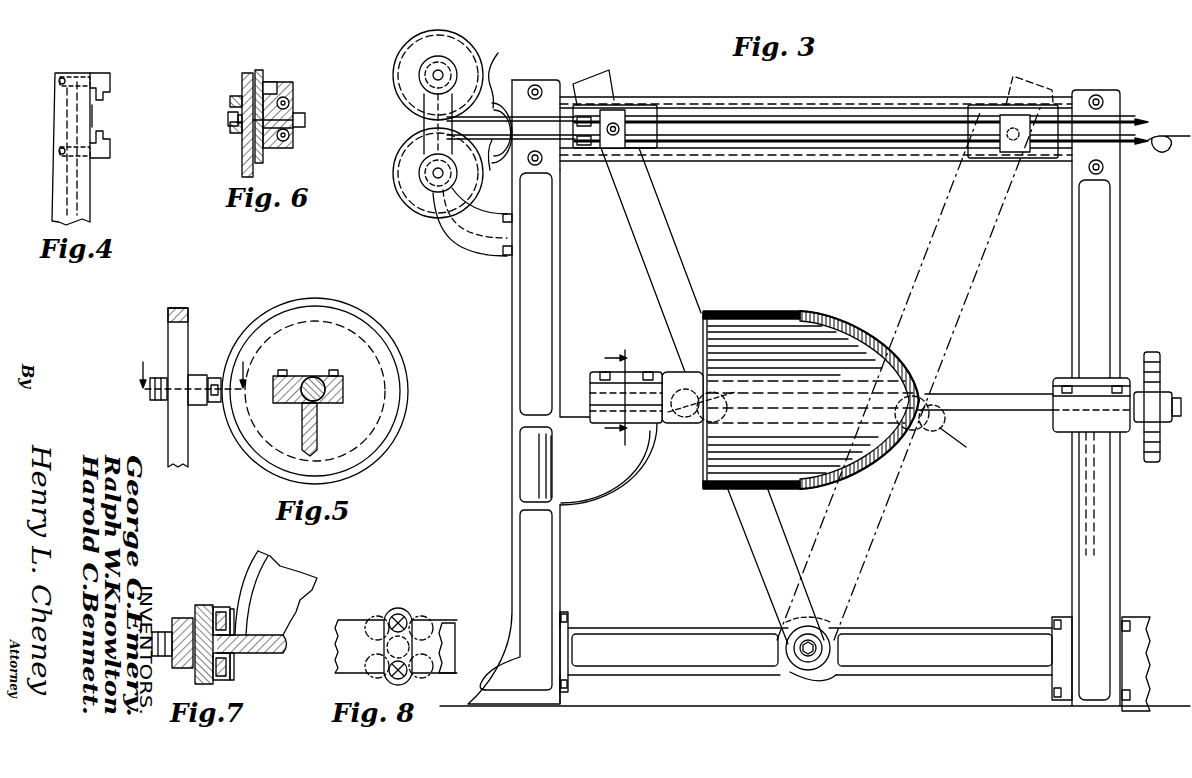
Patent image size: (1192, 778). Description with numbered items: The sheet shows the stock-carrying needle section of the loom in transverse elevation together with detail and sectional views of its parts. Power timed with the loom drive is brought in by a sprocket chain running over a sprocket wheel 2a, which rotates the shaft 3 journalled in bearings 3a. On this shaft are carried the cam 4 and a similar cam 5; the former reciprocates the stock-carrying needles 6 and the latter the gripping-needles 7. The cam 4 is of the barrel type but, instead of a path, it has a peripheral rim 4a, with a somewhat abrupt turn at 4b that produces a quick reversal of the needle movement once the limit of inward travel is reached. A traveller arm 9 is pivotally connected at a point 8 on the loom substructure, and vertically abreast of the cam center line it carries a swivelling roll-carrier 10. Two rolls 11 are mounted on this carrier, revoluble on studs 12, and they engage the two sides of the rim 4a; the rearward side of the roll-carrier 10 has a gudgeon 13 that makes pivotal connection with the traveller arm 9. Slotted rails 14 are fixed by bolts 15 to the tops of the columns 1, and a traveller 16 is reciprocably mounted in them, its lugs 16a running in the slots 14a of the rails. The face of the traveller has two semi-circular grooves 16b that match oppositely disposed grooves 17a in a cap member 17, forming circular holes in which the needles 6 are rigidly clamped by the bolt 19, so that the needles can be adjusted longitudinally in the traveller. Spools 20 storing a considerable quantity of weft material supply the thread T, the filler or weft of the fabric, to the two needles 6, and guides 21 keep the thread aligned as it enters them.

In FIG. 3, the columns 1 is at (525, 309).
In FIG. 4, the columns 1 is at (82, 204).
In FIG. 3, the sprocket wheel 2a is at (1153, 352).
In FIG. 3, the shaft 3 is at (995, 400).
In FIG. 5, the shaft 3 is at (320, 382).
In FIG. 3, the bearings 3a is at (640, 376).
In FIG. 5, the bearings 3a is at (300, 376).
In FIG. 3, the cam 4 is at (748, 322).
In FIG. 5, the cam 4 is at (360, 398).
In FIG. 7, the cam 4 is at (303, 590).
In FIG. 3, the peripheral rim 4a is at (866, 332).
In FIG. 5, the peripheral rim 4a is at (395, 356).
In FIG. 7, the peripheral rim 4a is at (240, 578).
In FIG. 3, the abrupt turn 4b is at (932, 400).
In FIG. 3, the cam 5 is at (617, 391).
In FIG. 3, the stock-carrying needles 6 is at (790, 143).
In FIG. 6, the stock-carrying needles 6 is at (290, 148).
In FIG. 5, the gripping-needles 7 is at (189, 380).
In FIG. 3, the pivot point 8 is at (822, 636).
In FIG. 3, the traveller arm 9 is at (660, 252).
In FIG. 6, the traveller arm 9 is at (246, 75).
In FIG. 5, the traveller arm 9 is at (180, 442).
In FIG. 7, the traveller arm 9 is at (180, 668).
In FIG. 8, the traveller arm 9 is at (350, 628).
In FIG. 5, the roll-carrier 10 is at (197, 375).
In FIG. 7, the roll-carrier 10 is at (205, 605).
In FIG. 8, the roll-carrier 10 is at (394, 610).
In FIG. 3, the roller 11 is at (712, 420).
In FIG. 5, the roller 11 is at (214, 378).
In FIG. 7, the roller 11 is at (225, 610).
In FIG. 8, the roller 11 is at (408, 612).
In FIG. 7, the studs 12 is at (234, 618).
In FIG. 6, the gudgeon 13 is at (230, 120).
In FIG. 5, the gudgeon 13 is at (170, 405).
In FIG. 7, the gudgeon 13 is at (178, 620).
In FIG. 3, the slotted rails 14 is at (689, 97).
In FIG. 4, the slotted rails 14 is at (110, 77).
In FIG. 6, the slotted rails 14 is at (258, 70).
In FIG. 4, the slots 14a is at (100, 110).
In FIG. 3, the bolts 15 is at (540, 87).
In FIG. 4, the bolts 15 is at (58, 84).
In FIG. 3, the traveller 16 is at (642, 148).
In FIG. 6, the traveller 16 is at (280, 90).
In FIG. 6, the lugs 16a is at (270, 84).
In FIG. 6, the semi-circular grooves 16b is at (236, 96).
In FIG. 3, the cap member 17 is at (602, 148).
In FIG. 6, the cap member 17 is at (290, 100).
In FIG. 6, the grooves 17a is at (290, 135).
In FIG. 3, the bolt 19 is at (620, 122).
In FIG. 6, the bolt 19 is at (305, 118).
In FIG. 3, the spools 20 is at (410, 97).
In FIG. 3, the guides 21 is at (496, 112).
In FIG. 3, the thread T is at (493, 111).